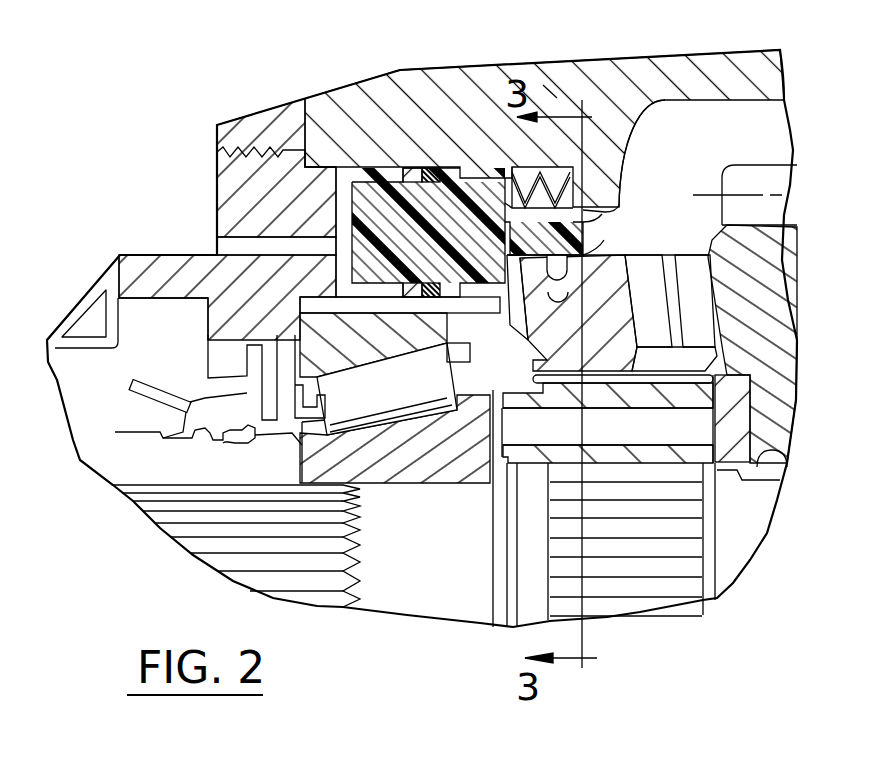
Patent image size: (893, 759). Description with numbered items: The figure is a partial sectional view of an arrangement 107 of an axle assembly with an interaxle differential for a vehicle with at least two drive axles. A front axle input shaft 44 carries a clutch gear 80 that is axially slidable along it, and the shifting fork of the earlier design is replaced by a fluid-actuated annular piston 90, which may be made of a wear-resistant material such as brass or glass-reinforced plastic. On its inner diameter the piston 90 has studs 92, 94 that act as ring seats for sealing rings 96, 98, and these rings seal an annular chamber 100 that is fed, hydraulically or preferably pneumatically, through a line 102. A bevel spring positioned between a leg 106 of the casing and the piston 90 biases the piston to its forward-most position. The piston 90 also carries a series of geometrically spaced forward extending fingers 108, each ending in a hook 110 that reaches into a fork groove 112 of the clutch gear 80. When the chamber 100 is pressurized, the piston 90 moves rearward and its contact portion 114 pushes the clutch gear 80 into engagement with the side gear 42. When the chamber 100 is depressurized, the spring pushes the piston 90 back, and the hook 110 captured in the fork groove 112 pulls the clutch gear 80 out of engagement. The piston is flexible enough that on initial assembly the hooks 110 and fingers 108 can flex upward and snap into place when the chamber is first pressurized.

The side gear 42 is at (727, 163).
The front axle input shaft 44 is at (400, 598).
The clutch gear 80 is at (493, 387).
The fluid-actuated annular piston 90 is at (362, 204).
The inner diameter stud 92 is at (383, 300).
The inner diameter stud 94 is at (413, 167).
The sealing ring 96 is at (428, 300).
The sealing ring 98 is at (432, 167).
The annular chamber 100 is at (342, 172).
The line 102 is at (227, 244).
The leg of the casing 106 is at (642, 128).
The arrangement 107 is at (361, 58).
The forward extending fingers 108 is at (620, 186).
The hook 110 is at (568, 262).
The fork groove 112 is at (502, 392).
The contact portion 114 is at (545, 358).